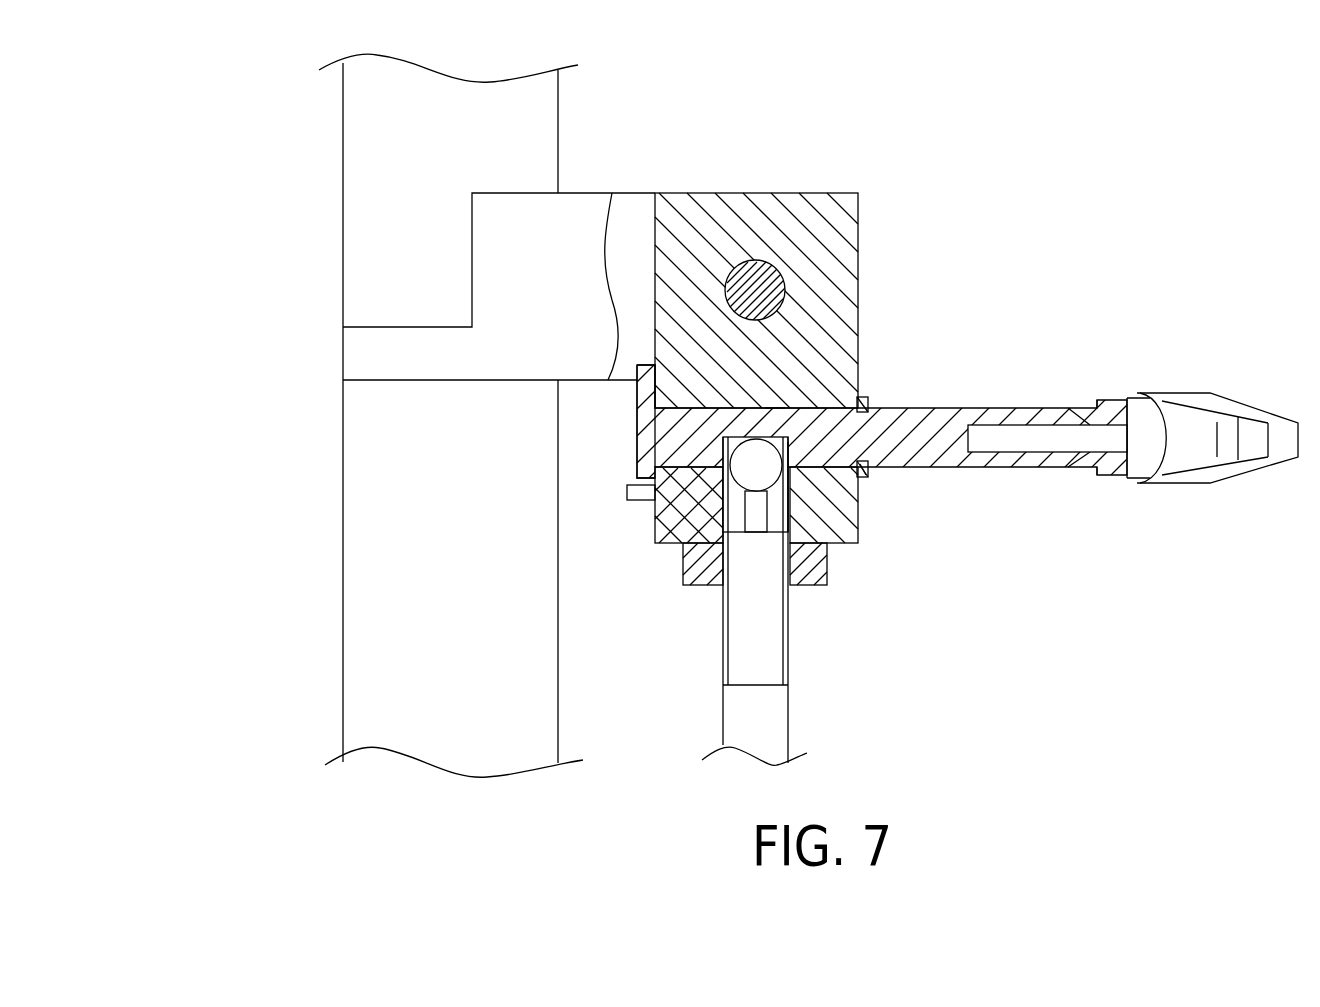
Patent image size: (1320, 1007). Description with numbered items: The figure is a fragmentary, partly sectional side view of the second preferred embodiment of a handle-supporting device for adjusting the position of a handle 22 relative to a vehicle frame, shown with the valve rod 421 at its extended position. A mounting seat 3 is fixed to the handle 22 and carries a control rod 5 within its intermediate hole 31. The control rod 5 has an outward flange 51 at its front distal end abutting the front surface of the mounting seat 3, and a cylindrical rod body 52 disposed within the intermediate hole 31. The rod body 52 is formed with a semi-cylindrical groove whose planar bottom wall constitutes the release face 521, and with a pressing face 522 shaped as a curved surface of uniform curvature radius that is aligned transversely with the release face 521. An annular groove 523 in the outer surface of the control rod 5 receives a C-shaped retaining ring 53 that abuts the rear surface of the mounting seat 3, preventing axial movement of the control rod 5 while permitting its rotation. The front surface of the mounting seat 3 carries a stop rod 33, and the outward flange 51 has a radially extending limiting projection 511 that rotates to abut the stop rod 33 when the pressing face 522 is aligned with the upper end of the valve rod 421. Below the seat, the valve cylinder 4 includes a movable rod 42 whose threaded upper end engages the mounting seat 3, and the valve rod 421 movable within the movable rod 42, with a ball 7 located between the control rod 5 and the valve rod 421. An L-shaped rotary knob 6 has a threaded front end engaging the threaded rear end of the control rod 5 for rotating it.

The handle 22 is at (363, 168).
The mounting seat 3 is at (678, 212).
The intermediate hole 31 is at (740, 467).
The stop rod 33 is at (632, 493).
The valve cylinder 4 is at (747, 631).
The movable rod 42 is at (745, 698).
The valve rod 421 is at (705, 555).
The control rod 5 is at (848, 412).
The outward flange 51 is at (645, 473).
The limiting projection 511 is at (636, 388).
The rod body 52 is at (905, 408).
The release face 521 is at (788, 442).
The pressing face 522 is at (773, 408).
The annular groove 523 is at (868, 452).
The C-shaped retaining ring 53 is at (866, 460).
The L-shaped rotary knob 6 is at (1217, 403).
The ball 7 is at (755, 505).